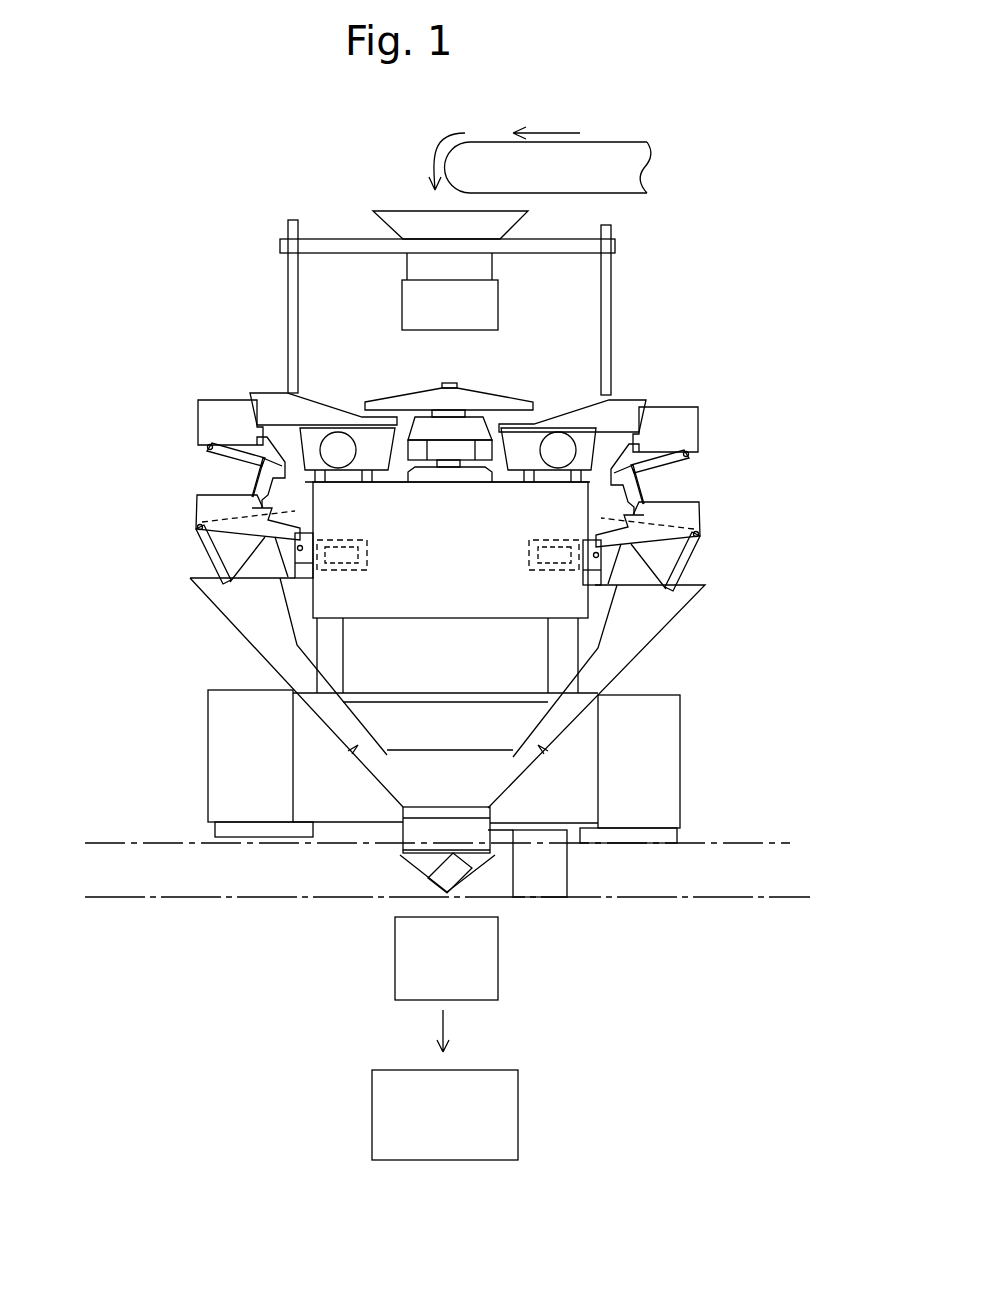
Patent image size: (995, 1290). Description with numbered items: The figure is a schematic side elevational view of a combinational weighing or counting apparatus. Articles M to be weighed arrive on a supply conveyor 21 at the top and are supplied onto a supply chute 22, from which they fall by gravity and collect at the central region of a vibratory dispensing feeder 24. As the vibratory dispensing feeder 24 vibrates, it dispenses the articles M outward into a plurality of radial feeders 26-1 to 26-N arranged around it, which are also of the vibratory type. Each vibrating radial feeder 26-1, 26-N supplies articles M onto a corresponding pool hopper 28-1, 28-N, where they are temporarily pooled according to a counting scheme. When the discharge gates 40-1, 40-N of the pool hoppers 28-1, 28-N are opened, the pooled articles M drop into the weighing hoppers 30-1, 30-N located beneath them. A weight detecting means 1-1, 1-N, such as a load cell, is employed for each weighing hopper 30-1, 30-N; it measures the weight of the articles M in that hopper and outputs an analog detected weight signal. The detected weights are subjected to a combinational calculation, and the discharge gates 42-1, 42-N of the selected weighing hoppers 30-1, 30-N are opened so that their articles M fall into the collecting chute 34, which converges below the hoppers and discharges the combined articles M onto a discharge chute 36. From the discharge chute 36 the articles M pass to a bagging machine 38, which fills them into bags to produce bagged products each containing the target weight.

The supply conveyor 21 is at (612, 143).
The articles to be weighed M is at (440, 157).
The supply chute 22 is at (390, 211).
The vibratory dispensing feeder 24 is at (490, 398).
The radial feeder 26-1 is at (275, 395).
The radial feeder 26-N is at (622, 404).
The pool hopper 28-1 is at (208, 412).
The pool hopper 28-N is at (687, 420).
The discharge gate 40-1 is at (212, 467).
The discharge gate 40-N is at (672, 475).
The weighing hopper 30-1 is at (200, 508).
The weighing hopper 30-N is at (675, 503).
The discharge gate 42-1 is at (215, 556).
The discharge gate 42-N is at (678, 560).
The weight detecting means 1-1 is at (328, 531).
The weight detecting means 1-N is at (578, 531).
The collecting chute 34 is at (228, 636).
The discharge chute 36 is at (483, 963).
The bagging machine 38 is at (518, 1118).